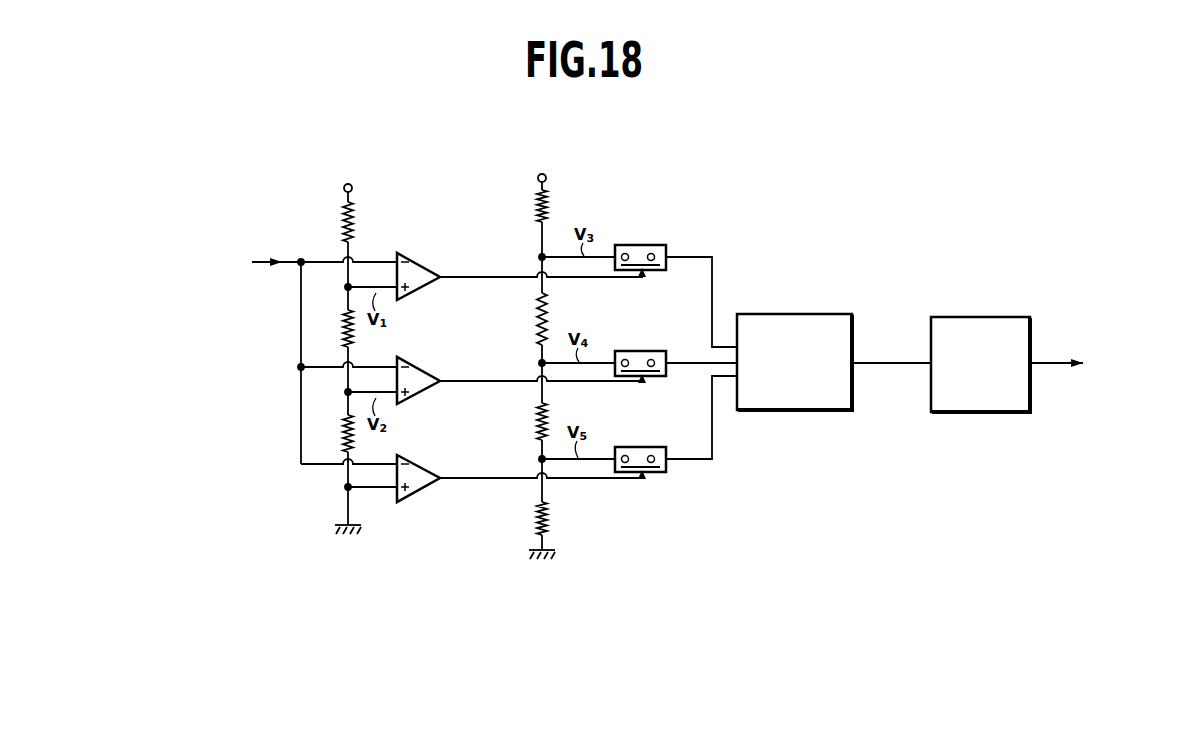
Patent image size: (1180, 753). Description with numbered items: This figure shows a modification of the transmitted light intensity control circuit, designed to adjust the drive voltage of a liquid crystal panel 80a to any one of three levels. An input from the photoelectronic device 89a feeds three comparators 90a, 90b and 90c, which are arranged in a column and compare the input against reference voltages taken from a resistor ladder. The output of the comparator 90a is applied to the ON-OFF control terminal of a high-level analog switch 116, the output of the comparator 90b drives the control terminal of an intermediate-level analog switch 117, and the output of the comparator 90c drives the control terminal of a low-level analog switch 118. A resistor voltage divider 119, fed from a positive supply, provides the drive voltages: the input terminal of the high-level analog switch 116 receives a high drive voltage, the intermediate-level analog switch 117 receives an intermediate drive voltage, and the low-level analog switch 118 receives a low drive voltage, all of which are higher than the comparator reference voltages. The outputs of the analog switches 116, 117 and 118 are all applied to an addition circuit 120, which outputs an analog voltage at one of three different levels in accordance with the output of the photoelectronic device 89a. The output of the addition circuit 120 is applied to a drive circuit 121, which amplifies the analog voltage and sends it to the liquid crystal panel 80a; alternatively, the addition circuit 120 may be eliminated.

The comparator 90a is at (430, 264).
The comparator 90b is at (430, 367).
The comparator 90c is at (428, 465).
The high-level analog switch 116 is at (656, 244).
The intermediate-level analog switch 117 is at (651, 350).
The low-level analog switch 118 is at (651, 446).
The resistor voltage divider 119 is at (547, 180).
The addition circuit 120 is at (831, 313).
The drive circuit 121 is at (1005, 316).
The photoelectronic device 89a is at (220, 264).
The liquid crystal panel 80a is at (1097, 364).